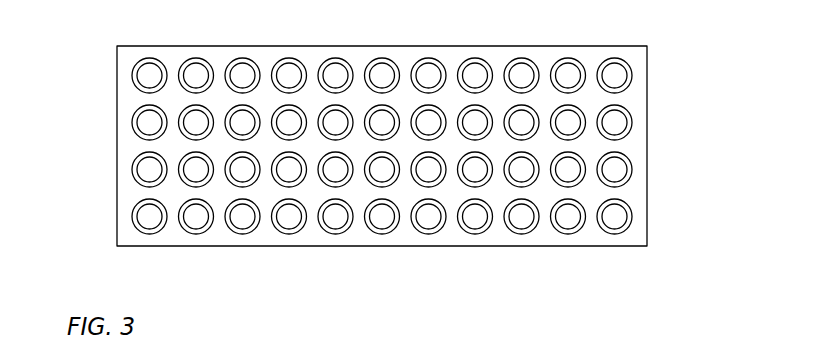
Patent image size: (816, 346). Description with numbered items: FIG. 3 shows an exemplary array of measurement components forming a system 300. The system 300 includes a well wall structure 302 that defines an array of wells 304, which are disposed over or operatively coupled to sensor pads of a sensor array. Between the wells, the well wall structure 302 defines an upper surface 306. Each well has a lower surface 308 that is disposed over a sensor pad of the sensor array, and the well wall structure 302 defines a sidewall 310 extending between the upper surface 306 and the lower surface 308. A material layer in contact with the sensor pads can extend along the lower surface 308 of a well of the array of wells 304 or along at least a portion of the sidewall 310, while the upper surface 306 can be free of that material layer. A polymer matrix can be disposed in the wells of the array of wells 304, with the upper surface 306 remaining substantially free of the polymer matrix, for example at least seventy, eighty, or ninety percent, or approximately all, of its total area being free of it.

The system 300 is at (647, 99).
The well wall structure 302 is at (630, 144).
The array of wells 304 is at (632, 170).
The upper surface 306 is at (128, 95).
The lower surface 308 is at (285, 70).
The sidewall 310 is at (297, 65).